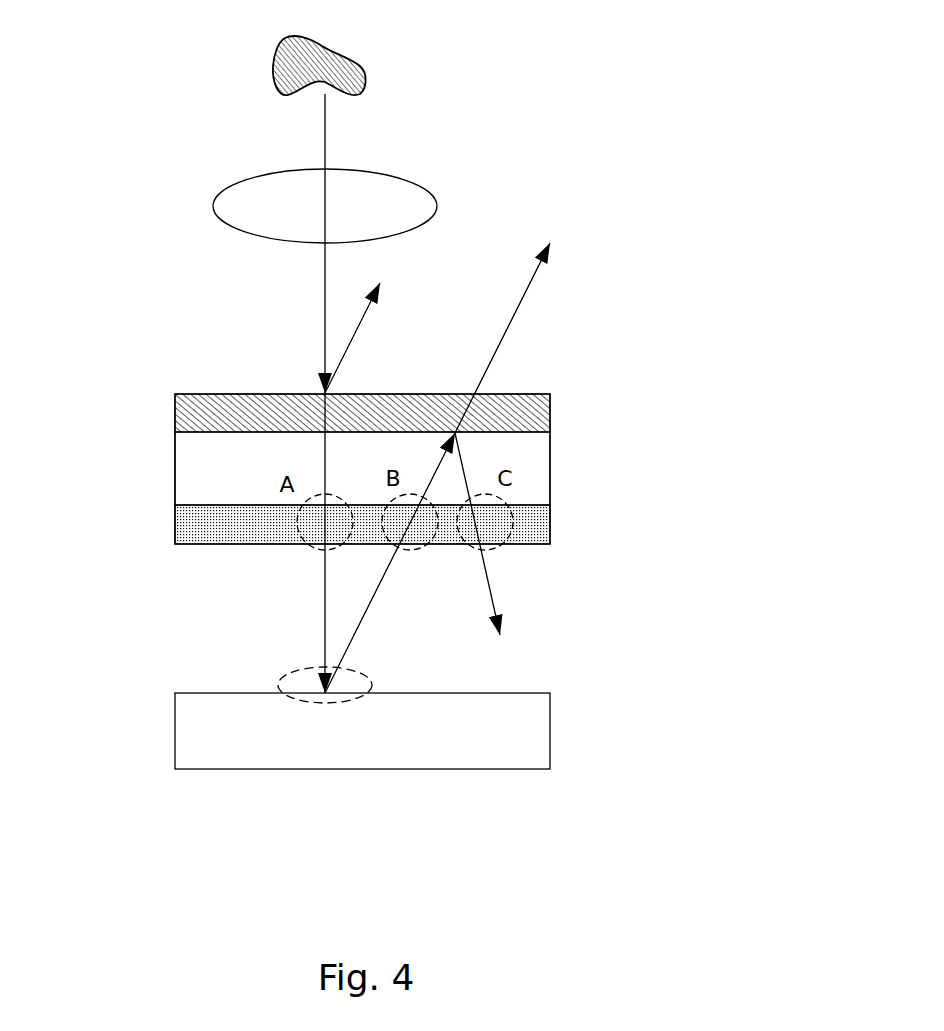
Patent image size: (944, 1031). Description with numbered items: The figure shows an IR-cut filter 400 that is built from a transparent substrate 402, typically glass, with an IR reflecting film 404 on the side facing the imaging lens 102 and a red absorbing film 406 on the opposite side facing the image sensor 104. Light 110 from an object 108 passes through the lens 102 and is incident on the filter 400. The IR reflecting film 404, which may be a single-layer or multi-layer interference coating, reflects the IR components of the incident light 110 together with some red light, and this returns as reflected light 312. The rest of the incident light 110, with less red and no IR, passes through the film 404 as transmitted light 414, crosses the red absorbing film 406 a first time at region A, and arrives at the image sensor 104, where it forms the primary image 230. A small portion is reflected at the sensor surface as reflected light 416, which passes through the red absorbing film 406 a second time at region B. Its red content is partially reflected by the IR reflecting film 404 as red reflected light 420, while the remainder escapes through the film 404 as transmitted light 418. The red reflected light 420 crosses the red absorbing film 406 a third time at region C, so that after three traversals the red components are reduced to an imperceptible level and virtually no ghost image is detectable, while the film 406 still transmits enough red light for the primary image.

The object 108 is at (363, 63).
The imaging lens 102 is at (239, 219).
The incident light 110 is at (323, 345).
The reflected light 312 is at (355, 337).
The IR-cut filter 400 is at (550, 470).
The IR reflecting film 404 is at (173, 413).
The transparent substrate 402 is at (173, 470).
The red absorbing film 406 is at (173, 527).
The transmitted light 414 is at (323, 645).
The reflected light 416 is at (382, 577).
The transmitted light 418 is at (500, 345).
The red reflected light 420 is at (488, 577).
The primary image 230 is at (345, 700).
The image sensor 104 is at (191, 745).